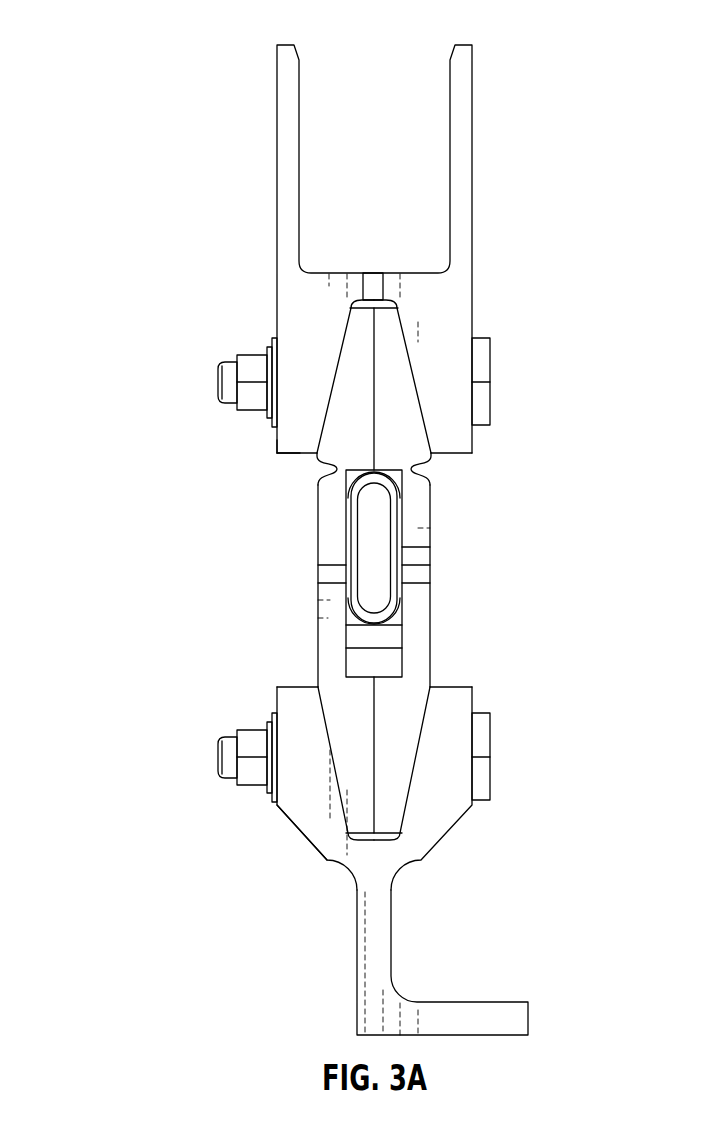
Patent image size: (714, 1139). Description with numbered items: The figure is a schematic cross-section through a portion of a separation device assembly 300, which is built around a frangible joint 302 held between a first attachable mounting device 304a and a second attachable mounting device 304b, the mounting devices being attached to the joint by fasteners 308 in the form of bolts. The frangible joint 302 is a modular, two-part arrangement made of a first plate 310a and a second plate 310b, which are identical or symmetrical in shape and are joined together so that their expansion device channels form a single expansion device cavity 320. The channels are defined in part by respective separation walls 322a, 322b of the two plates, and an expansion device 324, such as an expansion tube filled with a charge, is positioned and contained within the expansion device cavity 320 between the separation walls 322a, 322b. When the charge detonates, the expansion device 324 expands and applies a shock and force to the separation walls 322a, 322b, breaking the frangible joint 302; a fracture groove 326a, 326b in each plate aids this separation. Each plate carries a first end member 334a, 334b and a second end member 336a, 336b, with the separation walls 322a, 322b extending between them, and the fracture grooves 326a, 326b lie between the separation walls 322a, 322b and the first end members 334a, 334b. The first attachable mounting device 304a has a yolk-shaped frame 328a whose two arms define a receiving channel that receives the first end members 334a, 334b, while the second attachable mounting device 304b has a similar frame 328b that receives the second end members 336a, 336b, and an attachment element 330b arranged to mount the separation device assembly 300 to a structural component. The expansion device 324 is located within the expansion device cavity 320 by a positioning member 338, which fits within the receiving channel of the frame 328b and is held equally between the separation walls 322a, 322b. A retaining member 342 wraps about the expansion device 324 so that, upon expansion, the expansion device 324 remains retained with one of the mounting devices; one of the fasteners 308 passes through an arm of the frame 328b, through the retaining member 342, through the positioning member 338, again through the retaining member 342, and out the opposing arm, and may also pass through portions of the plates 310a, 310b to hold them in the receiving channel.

The separation device assembly 300 is at (148, 52).
The frangible joint 302 is at (193, 633).
The first attachable mounting device 304a is at (148, 290).
The second attachable mounting device 304b is at (238, 920).
The fastener 308 is at (490, 372).
The first plate 310a is at (317, 588).
The second plate 310b is at (432, 558).
The expansion device cavity 320 is at (402, 620).
The separation wall 322a is at (332, 635).
The separation wall 322b is at (415, 593).
The expansion device 324 is at (353, 520).
The fracture groove 326a is at (313, 467).
The fracture groove 326b is at (443, 470).
The frame 328a is at (303, 300).
The frame 328b is at (343, 858).
The attachment element 330b is at (288, 117).
The first end member 334a is at (353, 367).
The first end member 334b is at (395, 368).
The second end member 336a is at (353, 765).
The second end member 336b is at (395, 765).
The positioning member 338 is at (375, 657).
The retaining member 342 is at (403, 483).